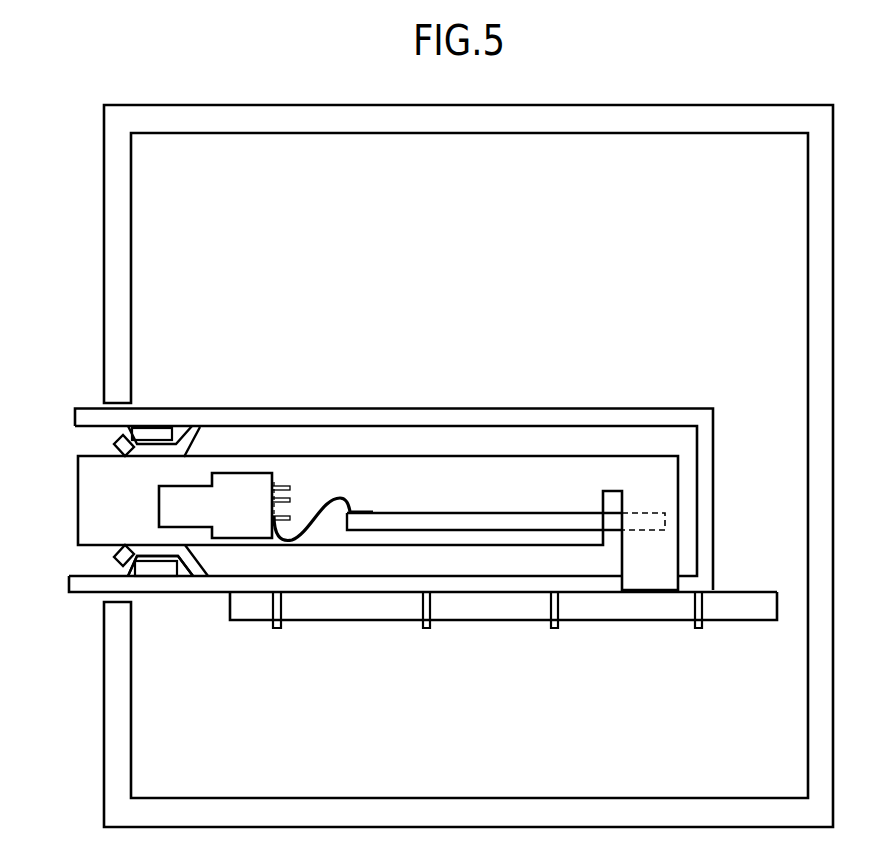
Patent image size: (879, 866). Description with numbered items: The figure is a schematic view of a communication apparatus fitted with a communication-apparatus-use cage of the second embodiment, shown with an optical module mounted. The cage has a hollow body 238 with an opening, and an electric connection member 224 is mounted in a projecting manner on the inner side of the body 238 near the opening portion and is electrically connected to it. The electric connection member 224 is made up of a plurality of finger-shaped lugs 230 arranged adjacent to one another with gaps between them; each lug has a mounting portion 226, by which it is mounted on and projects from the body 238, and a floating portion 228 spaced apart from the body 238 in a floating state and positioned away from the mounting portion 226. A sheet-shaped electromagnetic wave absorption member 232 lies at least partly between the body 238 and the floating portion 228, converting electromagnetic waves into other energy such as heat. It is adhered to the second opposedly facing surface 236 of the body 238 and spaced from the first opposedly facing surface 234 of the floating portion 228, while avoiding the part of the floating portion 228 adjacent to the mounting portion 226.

The electric connection member 224 is at (378, 427).
The finger-shaped lug 230 is at (160, 566).
The mounting portion 226 is at (198, 431).
The floating portion 228 is at (162, 450).
The electromagnetic wave absorption member 232 is at (161, 437).
The first opposedly facing surface 234 is at (146, 437).
The second opposedly facing surface 236 is at (121, 440).
The body 238 is at (447, 418).